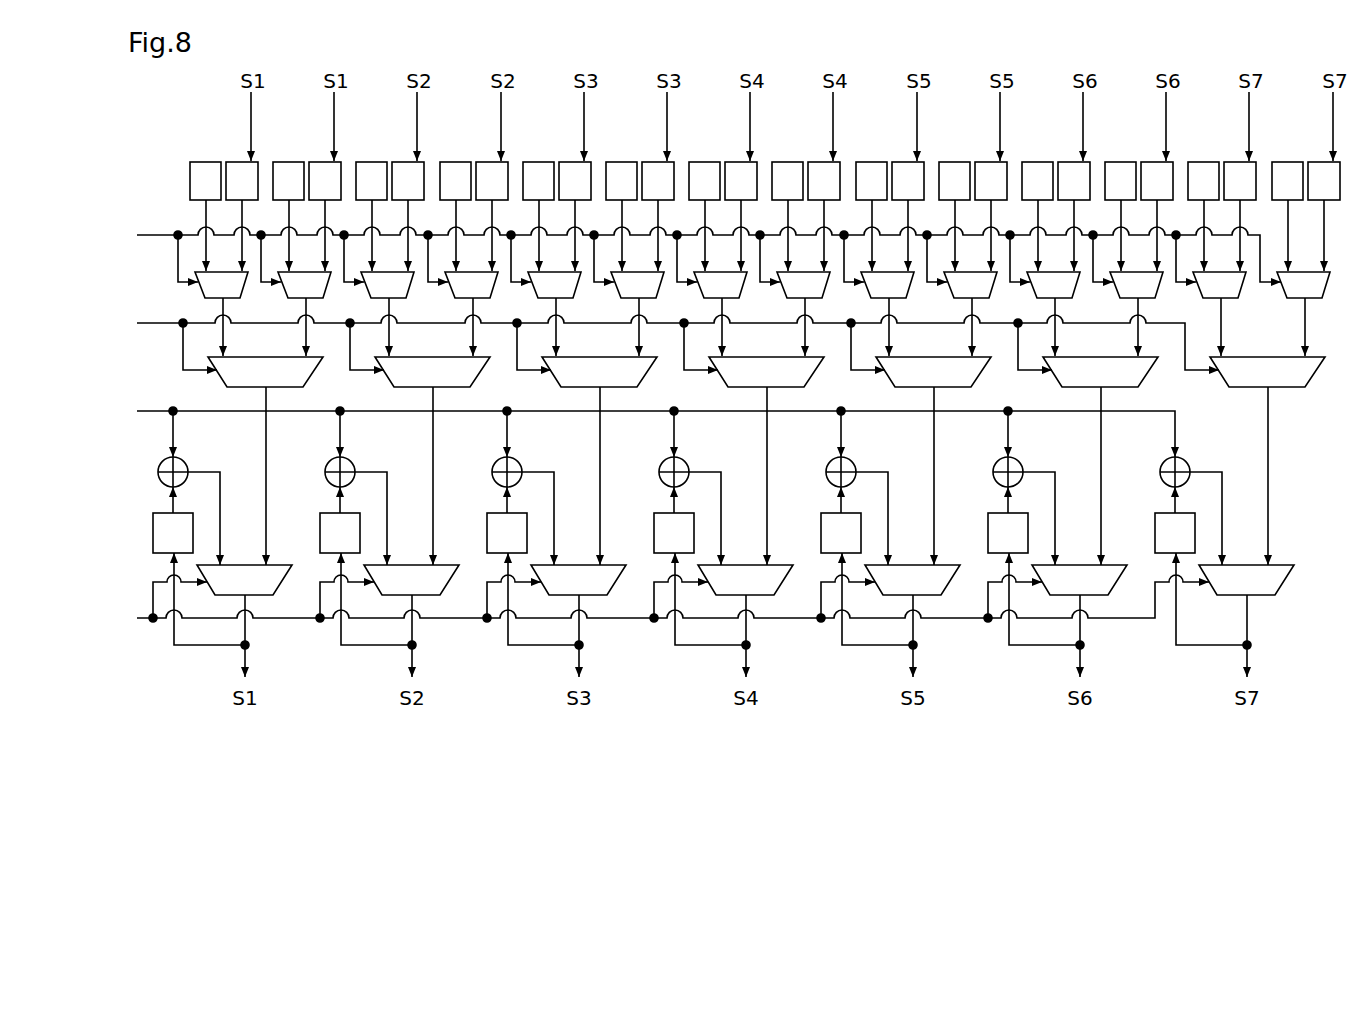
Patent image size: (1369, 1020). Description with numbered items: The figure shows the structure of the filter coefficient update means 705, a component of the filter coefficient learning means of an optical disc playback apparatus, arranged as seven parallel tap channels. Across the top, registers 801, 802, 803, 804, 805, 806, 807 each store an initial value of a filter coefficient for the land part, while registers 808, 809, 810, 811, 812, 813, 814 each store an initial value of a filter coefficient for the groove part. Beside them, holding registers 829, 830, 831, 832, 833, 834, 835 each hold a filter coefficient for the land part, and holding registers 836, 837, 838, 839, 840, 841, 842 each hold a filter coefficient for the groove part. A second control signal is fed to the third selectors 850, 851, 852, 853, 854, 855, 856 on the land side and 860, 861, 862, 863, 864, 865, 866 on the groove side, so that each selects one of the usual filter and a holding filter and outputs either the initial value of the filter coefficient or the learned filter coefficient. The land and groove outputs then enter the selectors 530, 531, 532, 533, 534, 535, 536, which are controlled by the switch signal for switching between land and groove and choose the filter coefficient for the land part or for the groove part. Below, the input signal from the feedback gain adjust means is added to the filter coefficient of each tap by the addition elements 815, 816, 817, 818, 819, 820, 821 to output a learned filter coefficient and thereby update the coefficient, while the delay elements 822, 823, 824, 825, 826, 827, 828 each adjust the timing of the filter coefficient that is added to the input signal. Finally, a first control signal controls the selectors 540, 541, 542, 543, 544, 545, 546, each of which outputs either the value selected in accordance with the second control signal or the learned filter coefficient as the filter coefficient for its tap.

The filter coefficient update means 705 is at (190, 672).
The register 801 is at (206, 148).
The register 802 is at (372, 148).
The register 803 is at (539, 148).
The register 804 is at (705, 148).
The register 805 is at (872, 148).
The register 806 is at (1038, 148).
The register 807 is at (1204, 148).
The register 808 is at (289, 148).
The register 809 is at (456, 148).
The register 810 is at (622, 148).
The register 811 is at (788, 148).
The register 812 is at (955, 148).
The register 813 is at (1121, 148).
The register 814 is at (1288, 148).
The holding register 829 is at (234, 159).
The holding register 830 is at (400, 159).
The holding register 831 is at (567, 159).
The holding register 832 is at (733, 159).
The holding register 833 is at (900, 159).
The holding register 834 is at (1066, 159).
The holding register 835 is at (1232, 159).
The holding register 836 is at (317, 159).
The holding register 837 is at (484, 159).
The holding register 838 is at (650, 159).
The holding register 839 is at (816, 159).
The holding register 840 is at (983, 159).
The holding register 841 is at (1149, 159).
The holding register 842 is at (1316, 159).
The selector 850 is at (221, 285).
The selector 851 is at (387, 285).
The selector 852 is at (554, 285).
The selector 853 is at (720, 285).
The selector 854 is at (887, 285).
The selector 855 is at (1053, 285).
The selector 856 is at (1219, 285).
The selector 860 is at (304, 285).
The selector 861 is at (471, 285).
The selector 862 is at (637, 285).
The selector 863 is at (803, 285).
The selector 864 is at (970, 285).
The selector 865 is at (1136, 285).
The selector 866 is at (1303, 285).
The selector 530 is at (265, 372).
The selector 531 is at (432, 372).
The selector 532 is at (599, 372).
The selector 533 is at (766, 372).
The selector 534 is at (933, 372).
The selector 535 is at (1100, 372).
The selector 536 is at (1267, 372).
The addition element 815 is at (198, 455).
The addition element 816 is at (365, 455).
The addition element 817 is at (532, 455).
The addition element 818 is at (699, 455).
The addition element 819 is at (866, 455).
The addition element 820 is at (1033, 455).
The addition element 821 is at (1200, 455).
The delay element 822 is at (156, 515).
The delay element 823 is at (323, 515).
The delay element 824 is at (490, 515).
The delay element 825 is at (657, 515).
The delay element 826 is at (824, 515).
The delay element 827 is at (991, 515).
The delay element 828 is at (1158, 515).
The selector 540 is at (244, 580).
The selector 541 is at (411, 580).
The selector 542 is at (578, 580).
The selector 543 is at (745, 580).
The selector 544 is at (912, 580).
The selector 545 is at (1079, 580).
The selector 546 is at (1246, 580).